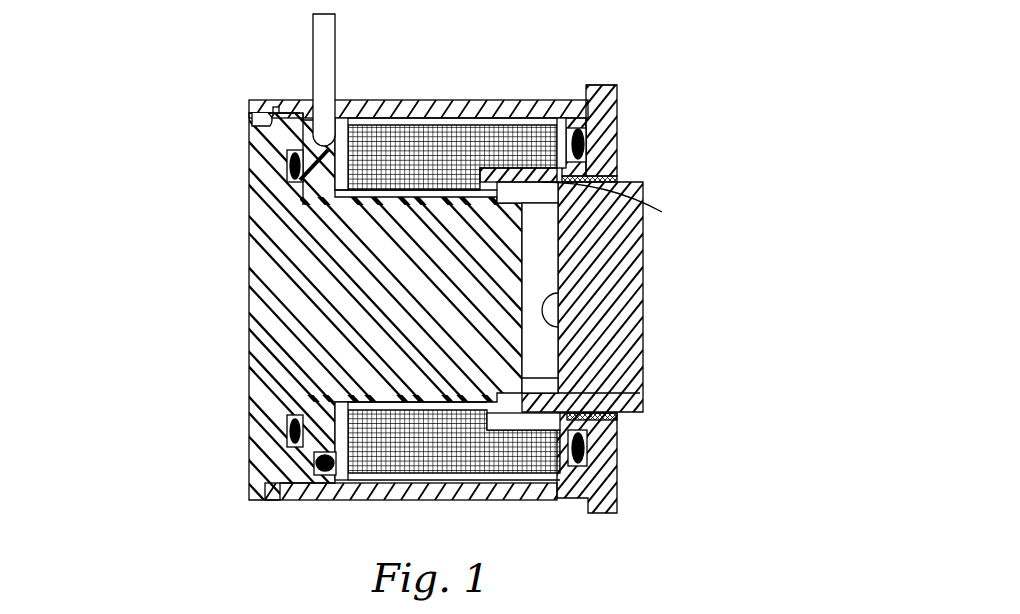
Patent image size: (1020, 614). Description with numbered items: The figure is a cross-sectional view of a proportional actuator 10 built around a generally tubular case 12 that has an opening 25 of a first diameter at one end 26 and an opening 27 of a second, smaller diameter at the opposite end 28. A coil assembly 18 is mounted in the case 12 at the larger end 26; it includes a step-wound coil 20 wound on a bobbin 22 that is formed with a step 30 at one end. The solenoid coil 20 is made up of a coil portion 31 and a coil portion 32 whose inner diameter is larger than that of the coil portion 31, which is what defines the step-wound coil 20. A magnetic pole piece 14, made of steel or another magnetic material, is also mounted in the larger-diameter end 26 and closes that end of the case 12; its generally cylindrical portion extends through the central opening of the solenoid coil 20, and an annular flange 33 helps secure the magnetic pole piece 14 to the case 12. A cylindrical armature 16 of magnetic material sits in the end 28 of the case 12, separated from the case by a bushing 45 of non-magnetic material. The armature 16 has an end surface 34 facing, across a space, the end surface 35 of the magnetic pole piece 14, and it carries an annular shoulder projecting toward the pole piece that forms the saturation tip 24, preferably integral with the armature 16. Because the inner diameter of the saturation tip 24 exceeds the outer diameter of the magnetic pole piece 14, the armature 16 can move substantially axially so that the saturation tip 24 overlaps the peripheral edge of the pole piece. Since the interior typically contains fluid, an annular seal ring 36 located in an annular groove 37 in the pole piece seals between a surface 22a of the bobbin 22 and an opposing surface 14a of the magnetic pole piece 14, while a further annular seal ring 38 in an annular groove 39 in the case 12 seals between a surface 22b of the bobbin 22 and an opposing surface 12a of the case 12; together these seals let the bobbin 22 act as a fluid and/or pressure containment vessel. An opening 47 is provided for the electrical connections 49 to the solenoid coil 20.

The proportional actuator 10 is at (200, 413).
The case 12 is at (530, 100).
The surface of the case 12a is at (593, 128).
The magnetic pole piece 14 is at (260, 310).
The surface of the magnetic pole piece 14a is at (287, 168).
The armature 16 is at (625, 363).
The coil assembly 18 is at (433, 120).
The step-wound coil 20 is at (507, 100).
The bobbin 22 is at (616, 139).
The surface of the bobbin 22a is at (303, 113).
The surface of the bobbin 22b is at (573, 125).
The saturation tip 24 is at (560, 478).
The opening 25 is at (252, 110).
The end of the case 26 is at (277, 105).
The opening 27 is at (537, 275).
The end of the case 28 is at (600, 513).
The step 30 is at (513, 200).
The coil portion 31 is at (398, 478).
The coil portion 32 is at (475, 478).
The annular flange 33 is at (253, 128).
The end surface of the armature 34 is at (540, 318).
The end surface of the magnetic pole piece 35 is at (560, 393).
The annular seal ring 36 is at (287, 190).
The annular groove 37 is at (292, 215).
The annular seal ring 38 is at (583, 142).
The annular groove 39 is at (642, 183).
The bushing 45 is at (613, 460).
The opening 47 is at (348, 112).
The electrical connections 49 is at (324, 18).